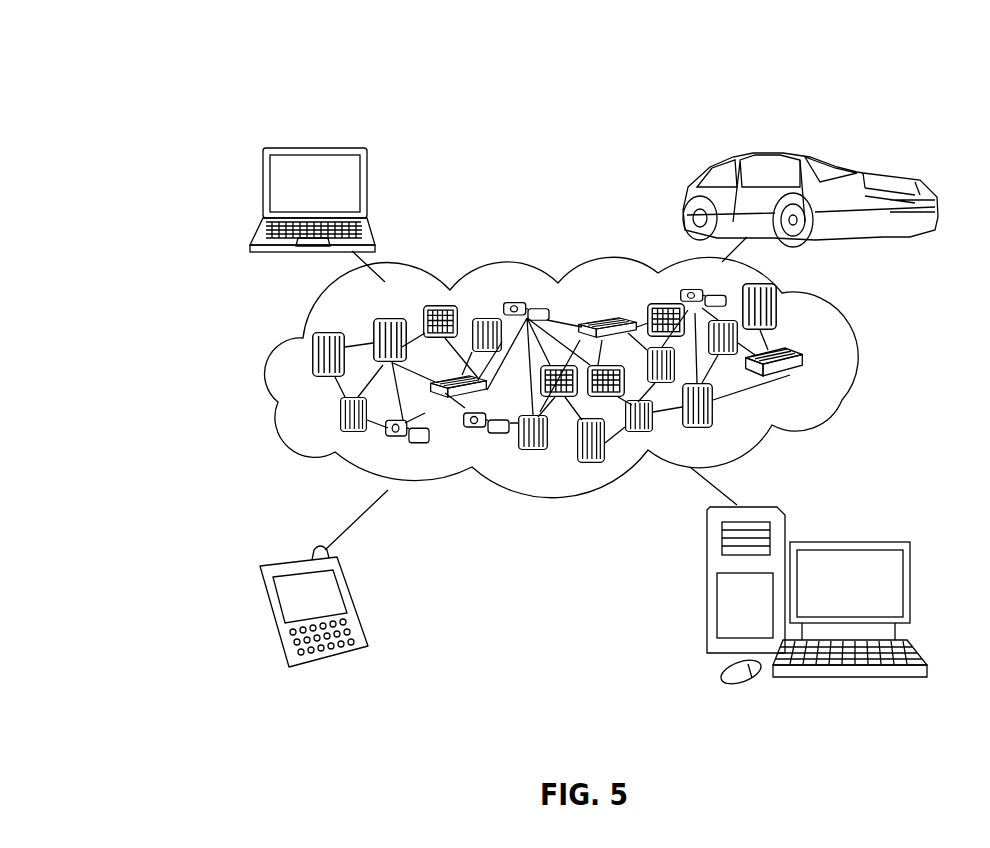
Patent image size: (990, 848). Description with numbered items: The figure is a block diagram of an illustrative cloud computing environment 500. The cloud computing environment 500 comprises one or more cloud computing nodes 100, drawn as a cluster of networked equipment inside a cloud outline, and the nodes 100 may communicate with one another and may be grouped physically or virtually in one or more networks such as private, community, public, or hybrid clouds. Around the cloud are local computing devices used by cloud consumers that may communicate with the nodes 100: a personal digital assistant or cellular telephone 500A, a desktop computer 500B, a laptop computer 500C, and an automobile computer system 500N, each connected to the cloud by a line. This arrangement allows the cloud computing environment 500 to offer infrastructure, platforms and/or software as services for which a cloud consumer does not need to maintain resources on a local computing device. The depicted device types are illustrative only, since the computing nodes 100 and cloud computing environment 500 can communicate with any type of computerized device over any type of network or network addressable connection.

The cloud computing environment 500 is at (206, 80).
The cloud computing nodes 100 is at (812, 382).
The personal digital assistant (PDA) or cellular telephone 500A is at (358, 603).
The desktop computer 500B is at (848, 542).
The laptop computer 500C is at (369, 187).
The automobile computer system 500N is at (687, 199).